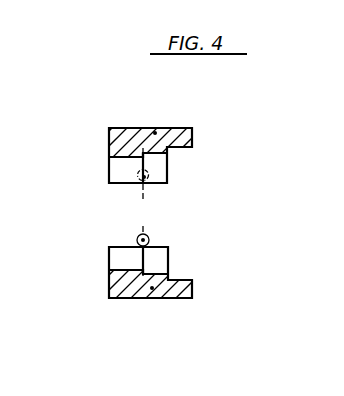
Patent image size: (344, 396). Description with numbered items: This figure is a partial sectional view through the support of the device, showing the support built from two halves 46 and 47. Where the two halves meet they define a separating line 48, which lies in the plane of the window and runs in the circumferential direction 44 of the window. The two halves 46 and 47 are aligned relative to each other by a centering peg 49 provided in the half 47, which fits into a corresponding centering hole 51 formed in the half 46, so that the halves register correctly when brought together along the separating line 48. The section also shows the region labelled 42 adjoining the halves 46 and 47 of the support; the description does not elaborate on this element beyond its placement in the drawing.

The gripper body 42 is at (148, 152).
The circumferential direction 44 is at (11, 20).
The half 46 is at (155, 132).
The half 47 is at (152, 289).
The separating line 48 is at (124, 185).
The centering peg 49 is at (110, 274).
The centering hole 51 is at (138, 175).